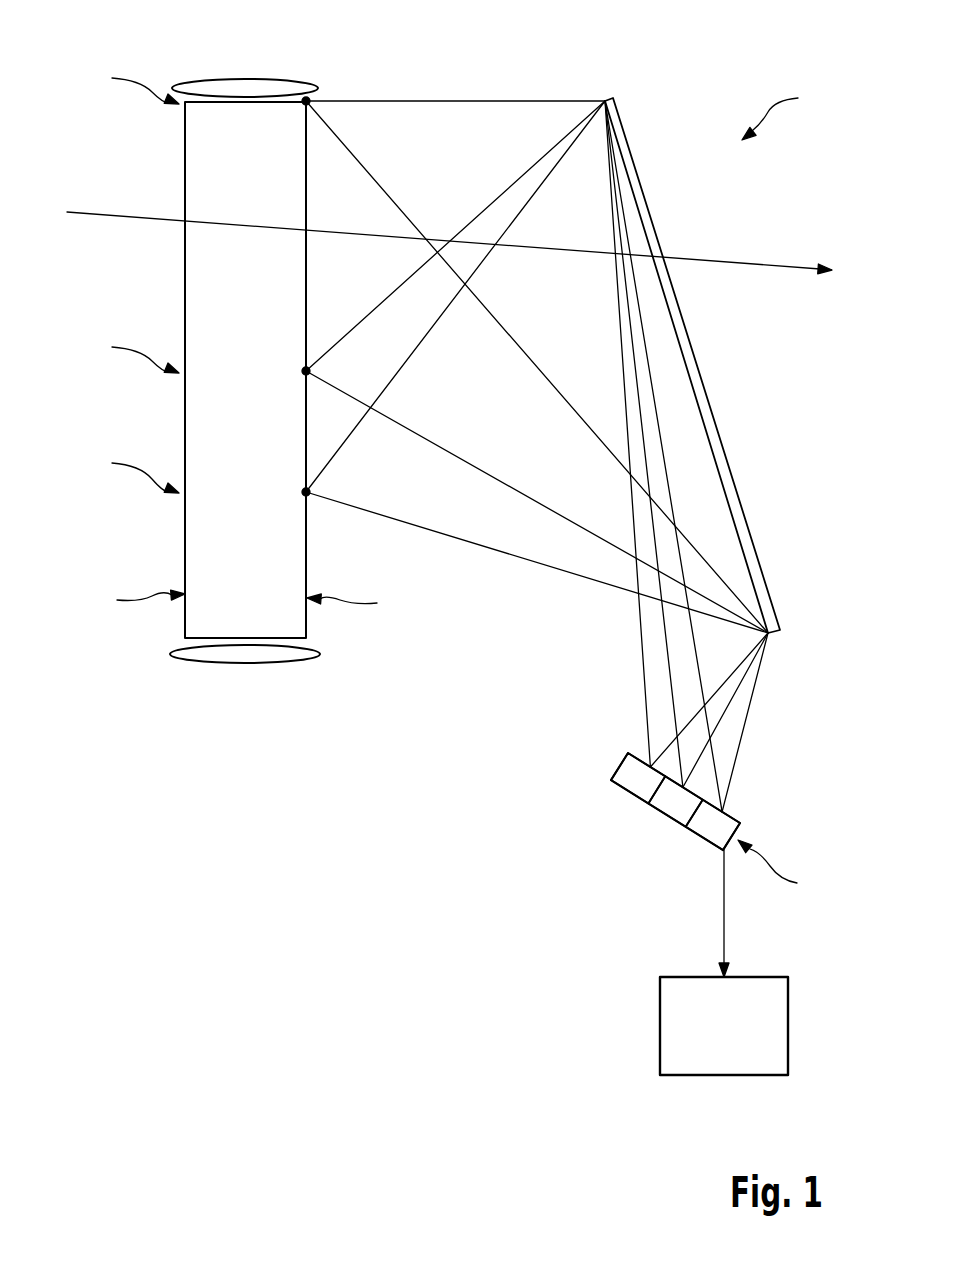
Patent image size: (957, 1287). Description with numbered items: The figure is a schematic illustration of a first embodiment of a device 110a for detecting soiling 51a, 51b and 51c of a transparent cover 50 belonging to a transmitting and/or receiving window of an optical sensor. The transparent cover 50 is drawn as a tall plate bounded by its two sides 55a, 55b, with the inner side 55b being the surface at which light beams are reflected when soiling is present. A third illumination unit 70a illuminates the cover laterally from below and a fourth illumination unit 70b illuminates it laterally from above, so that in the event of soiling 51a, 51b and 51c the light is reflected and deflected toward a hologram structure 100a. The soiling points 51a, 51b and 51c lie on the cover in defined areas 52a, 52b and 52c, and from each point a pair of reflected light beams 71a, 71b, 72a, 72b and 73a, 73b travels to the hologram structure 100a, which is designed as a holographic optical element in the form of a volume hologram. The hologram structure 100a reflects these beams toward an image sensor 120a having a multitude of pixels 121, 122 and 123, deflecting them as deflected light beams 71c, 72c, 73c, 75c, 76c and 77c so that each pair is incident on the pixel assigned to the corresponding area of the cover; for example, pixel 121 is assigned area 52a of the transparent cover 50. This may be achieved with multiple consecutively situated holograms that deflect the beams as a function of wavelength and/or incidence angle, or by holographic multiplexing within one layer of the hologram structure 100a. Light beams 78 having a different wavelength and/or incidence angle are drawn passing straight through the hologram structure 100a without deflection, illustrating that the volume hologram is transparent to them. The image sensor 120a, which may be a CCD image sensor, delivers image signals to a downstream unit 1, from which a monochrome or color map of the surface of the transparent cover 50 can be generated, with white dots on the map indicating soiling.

The evaluation unit 1 is at (790, 1025).
The transparent cover 50 is at (185, 566).
The soiling 51a is at (316, 93).
The soiling 51b is at (292, 371).
The soiling 51c is at (292, 492).
The area of transparent cover 52a is at (122, 82).
The area of transparent cover 52b is at (122, 351).
The third light beam 52c is at (122, 470).
The first side wall 55a is at (126, 600).
The inner side of transparent cover 55b is at (365, 605).
The third illumination unit 70a is at (244, 664).
The fourth illumination unit 70b is at (247, 78).
The reflected light beam 71a is at (487, 100).
The reflected light beam 71b is at (378, 182).
The deflected light beam 71c is at (760, 665).
The reflected light beam 72a is at (375, 308).
The reflected light beam 72b is at (437, 444).
The deflected light beam 72c is at (667, 652).
The reflected light beam 73a is at (417, 348).
The reflected light beam 73b is at (388, 517).
The deflected light beam 73c is at (636, 624).
The deflected light beam 75c is at (700, 687).
The deflected light beam 76c is at (716, 697).
The deflected light beam 77c is at (746, 688).
The light beams 78 is at (93, 211).
The hologram structure 100a is at (682, 312).
The device 110a is at (800, 111).
The image sensor 120a is at (732, 827).
The pixel 121 is at (637, 781).
The pixel 122 is at (678, 808).
The pixel 123 is at (717, 831).